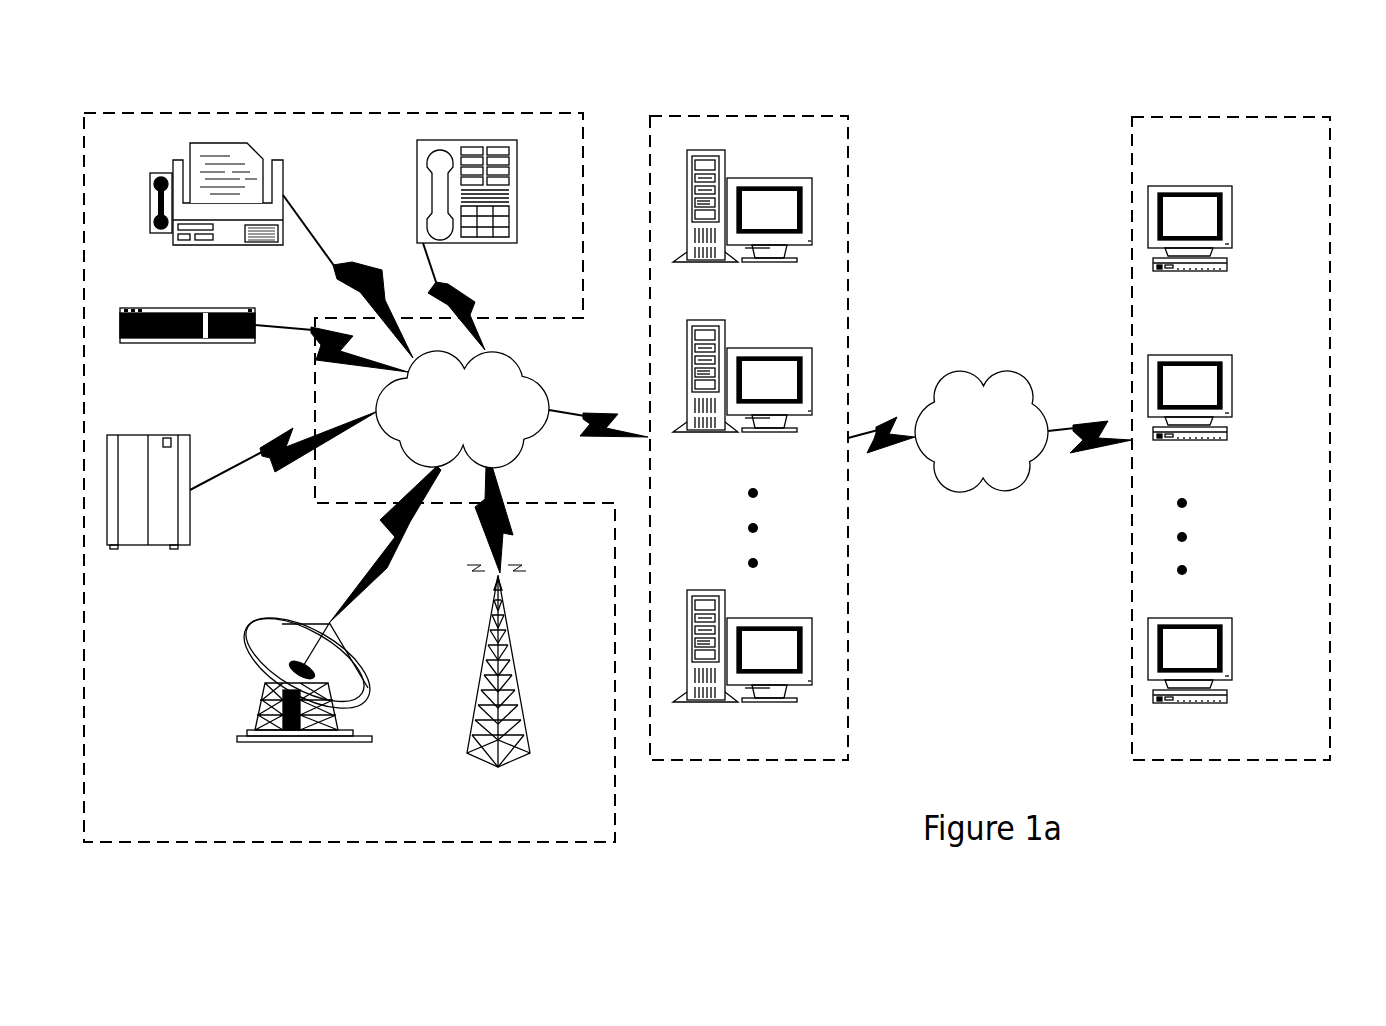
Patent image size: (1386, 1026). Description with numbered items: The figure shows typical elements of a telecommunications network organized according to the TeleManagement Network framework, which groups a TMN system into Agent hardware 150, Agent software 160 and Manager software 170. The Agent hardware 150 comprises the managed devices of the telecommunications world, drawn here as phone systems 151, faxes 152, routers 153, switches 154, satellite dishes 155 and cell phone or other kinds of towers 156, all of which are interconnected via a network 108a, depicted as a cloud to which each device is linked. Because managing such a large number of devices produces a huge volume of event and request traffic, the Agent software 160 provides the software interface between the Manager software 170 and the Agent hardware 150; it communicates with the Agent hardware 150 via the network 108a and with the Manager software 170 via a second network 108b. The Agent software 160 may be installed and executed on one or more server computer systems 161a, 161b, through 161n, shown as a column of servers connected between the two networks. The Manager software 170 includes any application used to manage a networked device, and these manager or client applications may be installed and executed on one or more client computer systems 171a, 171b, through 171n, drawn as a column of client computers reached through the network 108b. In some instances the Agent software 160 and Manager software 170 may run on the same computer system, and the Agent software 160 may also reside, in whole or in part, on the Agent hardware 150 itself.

The Agent hardware 150 is at (340, 113).
The phone systems 151 is at (437, 243).
The faxes 152 is at (160, 233).
The routers 153 is at (128, 343).
The switches 154 is at (113, 547).
The satellite dishes 155 is at (247, 742).
The towers 156 is at (475, 753).
The network 108a is at (488, 434).
The network 108b is at (1006, 456).
The Agent software 160 is at (765, 115).
The server computer system 161a is at (680, 263).
The server computer system 161b is at (680, 433).
The server computer system 161n is at (680, 703).
The Manager software 170 is at (1250, 117).
The client computer system 171a is at (1163, 272).
The client computer system 171b is at (1163, 441).
The client computer system 171n is at (1163, 704).